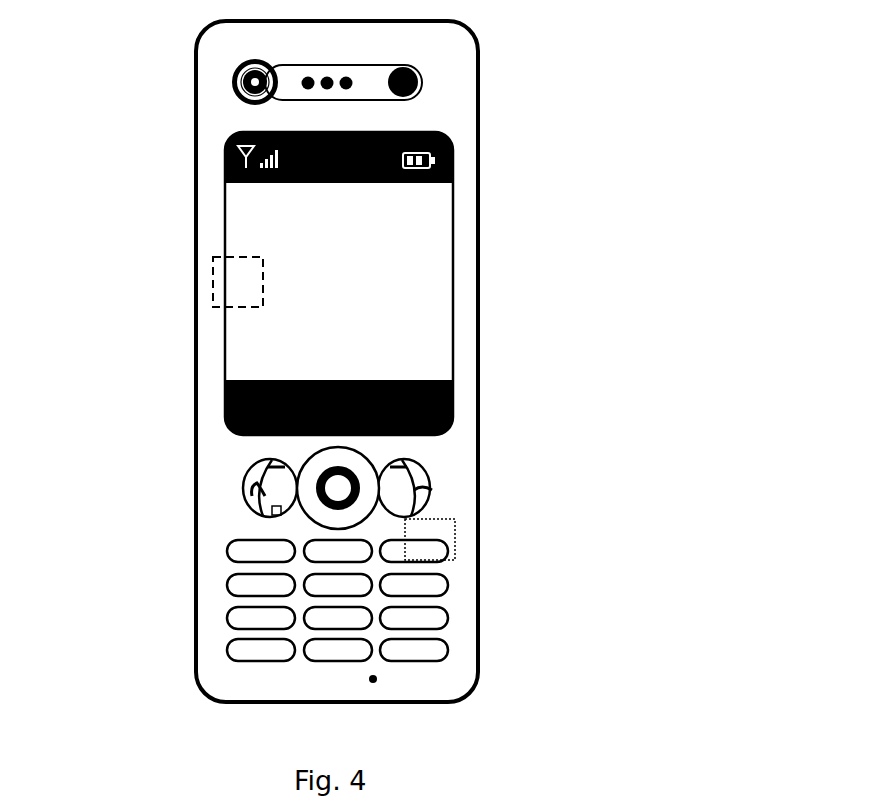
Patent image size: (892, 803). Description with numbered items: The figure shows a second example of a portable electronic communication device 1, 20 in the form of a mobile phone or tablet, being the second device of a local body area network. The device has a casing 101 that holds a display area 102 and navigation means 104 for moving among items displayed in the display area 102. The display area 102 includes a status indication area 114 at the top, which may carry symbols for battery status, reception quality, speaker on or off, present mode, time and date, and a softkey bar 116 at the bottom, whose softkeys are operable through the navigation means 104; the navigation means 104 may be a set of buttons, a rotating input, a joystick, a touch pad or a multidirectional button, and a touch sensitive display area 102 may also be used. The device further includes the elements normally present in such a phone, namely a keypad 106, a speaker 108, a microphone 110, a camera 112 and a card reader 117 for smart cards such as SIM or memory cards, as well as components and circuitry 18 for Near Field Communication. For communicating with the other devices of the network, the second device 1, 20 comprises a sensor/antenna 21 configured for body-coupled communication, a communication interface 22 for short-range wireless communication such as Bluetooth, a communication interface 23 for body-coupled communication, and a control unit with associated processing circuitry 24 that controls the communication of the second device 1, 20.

The portable electronic communication device 1 is at (475, 361).
The second portable electronic communication device 20 is at (337, 361).
The sensor/antenna 21 is at (337, 361).
The communication interface 22 is at (337, 361).
The communication interface 23 is at (337, 361).
The control unit with associated processing circuitry 24 is at (482, 77).
The casing 101 is at (193, 360).
The display area 102 is at (310, 292).
The navigation means 104 is at (372, 451).
The keypad 106 is at (245, 652).
The speaker 108 is at (360, 89).
The microphone 110 is at (370, 681).
The camera 112 is at (229, 91).
The status indication area 114 is at (277, 188).
The softkey bar 116 is at (225, 393).
The card reader 117 is at (455, 528).
The circuitry for Near Field Communication 18 is at (228, 283).